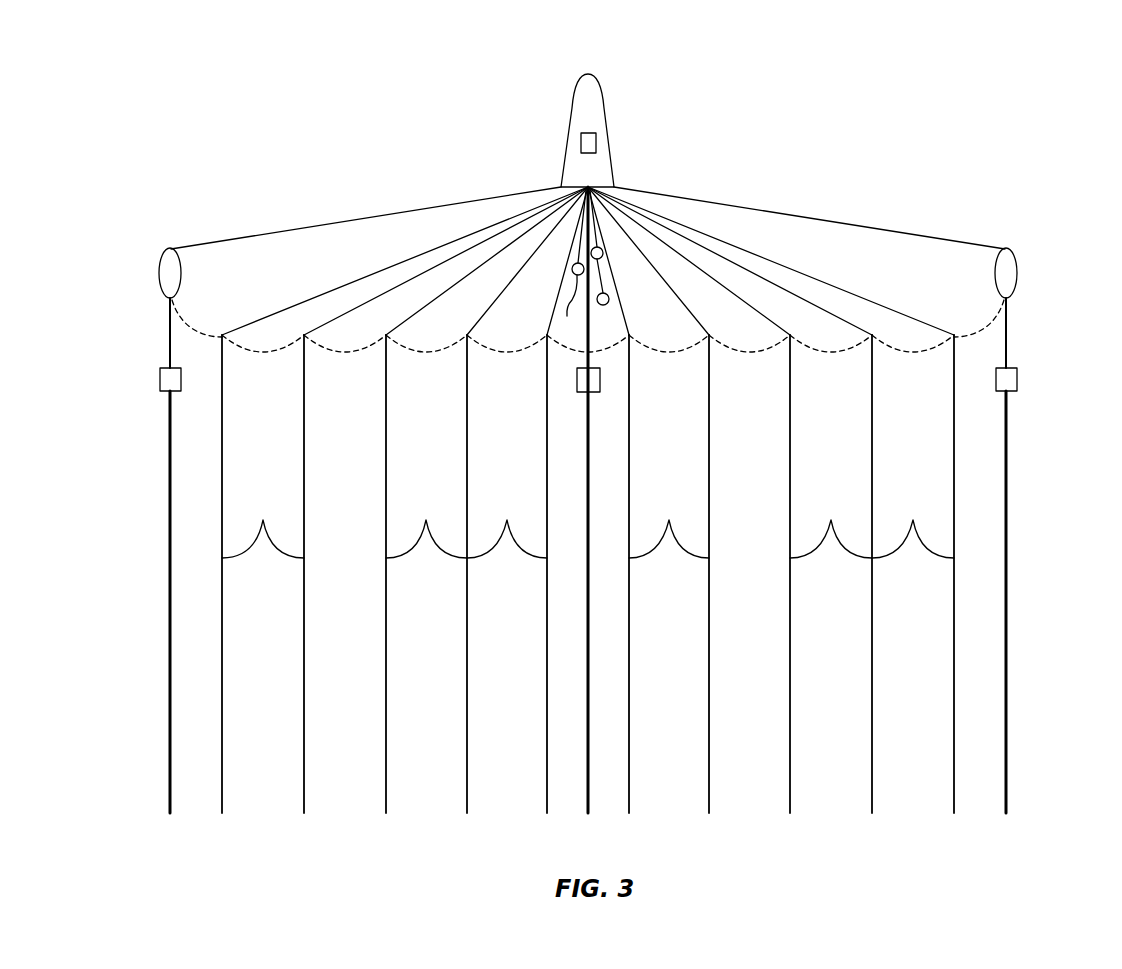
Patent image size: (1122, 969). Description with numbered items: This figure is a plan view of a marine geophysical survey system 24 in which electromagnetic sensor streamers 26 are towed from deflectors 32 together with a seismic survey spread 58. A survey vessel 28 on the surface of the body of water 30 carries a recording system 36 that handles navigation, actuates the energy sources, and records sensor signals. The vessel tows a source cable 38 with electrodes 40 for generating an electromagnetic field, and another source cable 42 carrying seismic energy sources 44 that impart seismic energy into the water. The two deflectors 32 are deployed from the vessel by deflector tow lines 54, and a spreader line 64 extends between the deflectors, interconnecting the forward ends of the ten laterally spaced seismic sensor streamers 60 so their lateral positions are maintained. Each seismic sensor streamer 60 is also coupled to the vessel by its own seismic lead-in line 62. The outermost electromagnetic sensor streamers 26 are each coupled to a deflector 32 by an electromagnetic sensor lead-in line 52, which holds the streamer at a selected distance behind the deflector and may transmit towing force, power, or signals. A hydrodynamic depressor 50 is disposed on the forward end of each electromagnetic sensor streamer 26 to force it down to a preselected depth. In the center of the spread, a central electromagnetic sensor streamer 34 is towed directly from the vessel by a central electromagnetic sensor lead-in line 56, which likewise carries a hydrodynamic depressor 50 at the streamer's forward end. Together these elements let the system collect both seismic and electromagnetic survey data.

The marine geophysical survey system 24 is at (731, 76).
The electromagnetic sensor streamers 26 is at (168, 546).
The survey vessel 28 is at (604, 95).
The body of water 30 is at (264, 143).
The deflectors 32 is at (164, 254).
The central electromagnetic sensor streamer 34 is at (590, 612).
The recording system 36 is at (597, 143).
The source cable 38 is at (609, 300).
The electrodes 40 is at (601, 258).
The source cable 42 is at (576, 231).
The seismic energy sources 44 is at (568, 309).
The hydrodynamic depressors 50 is at (159, 377).
The electromagnetic sensor lead-in lines 52 is at (168, 324).
The deflector tow lines 54 is at (327, 217).
The central electromagnetic sensor lead-in line 56 is at (588, 336).
The seismic survey spread 58 is at (374, 146).
The seismic sensor streamers 60 is at (588, 574).
The seismic lead-in lines 62 is at (557, 283).
The spreader line 64 is at (183, 316).